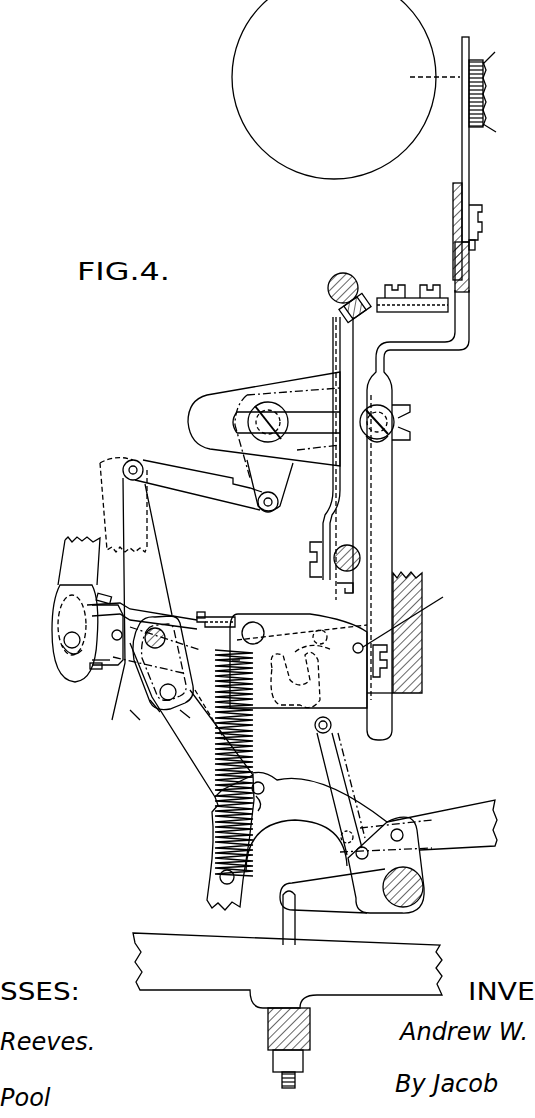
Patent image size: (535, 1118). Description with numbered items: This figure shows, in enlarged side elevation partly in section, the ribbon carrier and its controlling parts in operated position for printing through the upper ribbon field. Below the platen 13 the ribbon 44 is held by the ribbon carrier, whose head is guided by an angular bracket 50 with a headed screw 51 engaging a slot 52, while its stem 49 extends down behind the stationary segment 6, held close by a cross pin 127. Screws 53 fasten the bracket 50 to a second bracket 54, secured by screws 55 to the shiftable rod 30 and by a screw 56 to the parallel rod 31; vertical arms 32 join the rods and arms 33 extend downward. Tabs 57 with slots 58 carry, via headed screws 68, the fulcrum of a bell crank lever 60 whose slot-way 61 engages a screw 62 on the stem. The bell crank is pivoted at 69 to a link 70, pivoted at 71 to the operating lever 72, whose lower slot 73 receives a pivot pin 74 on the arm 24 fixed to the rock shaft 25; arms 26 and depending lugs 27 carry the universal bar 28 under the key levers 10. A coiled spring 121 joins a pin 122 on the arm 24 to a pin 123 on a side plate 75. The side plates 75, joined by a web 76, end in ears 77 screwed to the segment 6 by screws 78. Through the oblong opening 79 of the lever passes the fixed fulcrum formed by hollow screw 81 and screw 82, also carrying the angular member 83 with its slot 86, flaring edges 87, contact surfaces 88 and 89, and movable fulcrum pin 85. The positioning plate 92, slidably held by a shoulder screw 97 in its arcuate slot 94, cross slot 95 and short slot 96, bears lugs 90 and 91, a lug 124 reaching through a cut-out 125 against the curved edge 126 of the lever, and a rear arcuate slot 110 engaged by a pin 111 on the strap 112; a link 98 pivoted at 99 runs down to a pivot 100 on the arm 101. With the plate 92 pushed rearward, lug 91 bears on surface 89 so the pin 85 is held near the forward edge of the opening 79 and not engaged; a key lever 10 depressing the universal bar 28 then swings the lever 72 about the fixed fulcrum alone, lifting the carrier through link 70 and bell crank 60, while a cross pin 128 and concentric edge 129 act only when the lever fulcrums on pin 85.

The platen 13 is at (412, 8).
The ribbon 44 is at (489, 89).
The angular bracket 50 is at (453, 196).
The headed screw 51 is at (470, 210).
The slot 52 is at (476, 248).
The stem 49 is at (470, 328).
The screws 53 is at (425, 286).
The second angular bracket 54 is at (411, 312).
The screws 55 is at (362, 318).
The shiftable rod 30 is at (344, 273).
The vertical arms 32 is at (340, 494).
The tabs or ears 57 is at (218, 393).
The headed screws 68 is at (268, 402).
The open mouthed slots 58 is at (305, 412).
The slot-way 61 is at (400, 418).
The screw 62 is at (377, 440).
The bell crank lever 60 is at (270, 485).
The pivotal connection 69 is at (264, 510).
The link 70 is at (200, 495).
The pivot 71 is at (134, 460).
The operating lever 72 is at (160, 557).
The headed screw 82 is at (140, 680).
The hollow headed screw 81 is at (163, 632).
The fulcrum pin 85 is at (172, 700).
The angular member or lever 83 is at (130, 702).
The oblong opening 79 is at (150, 716).
The cross pin 128 is at (222, 720).
The contact surface 88 is at (100, 606).
The lug 90 is at (105, 594).
The contact surface 89 is at (93, 670).
The lug 91 is at (100, 668).
The positioning member or plate 92 is at (67, 668).
The arm or strap 112 is at (68, 562).
The slot 86 is at (85, 634).
The arcuate slot 110 is at (92, 620).
The pin 111 is at (70, 641).
The cut-away edges 87 is at (62, 650).
The web 76 is at (240, 616).
The cross slot 95 is at (295, 668).
The upwardly extending slot 96 is at (300, 639).
The pin 123 is at (255, 622).
The lug 124 is at (213, 614).
The cut-out 125 is at (228, 615).
The curved edge portion 126 is at (203, 612).
The edge 129 is at (224, 656).
The headed shoulder screw 97 is at (324, 631).
The arcuate slot 94 is at (372, 624).
The cross pin 127 is at (419, 611).
The stationary segment 6 is at (422, 621).
The headed screws 78 is at (373, 665).
The out-turned ears 77 is at (380, 693).
The arms 33 is at (337, 588).
The screw 56 is at (310, 556).
The rod 31 is at (356, 552).
The side plates 75 is at (331, 730).
The link 98 is at (343, 770).
The pivotal connection 99 is at (316, 729).
The arm 24 is at (296, 782).
The headed pivot pin 74 is at (264, 792).
The open mouthed slot 73 is at (258, 803).
The coiled spring 121 is at (214, 808).
The pin 122 is at (222, 885).
The arm 101 is at (432, 818).
The pivotal connection 100 is at (354, 852).
The rock shaft 25 is at (423, 885).
The arms 26 is at (320, 896).
The depending arms or lugs 27 is at (283, 923).
The key lever 10 is at (207, 984).
The universal bar 28 is at (310, 1031).